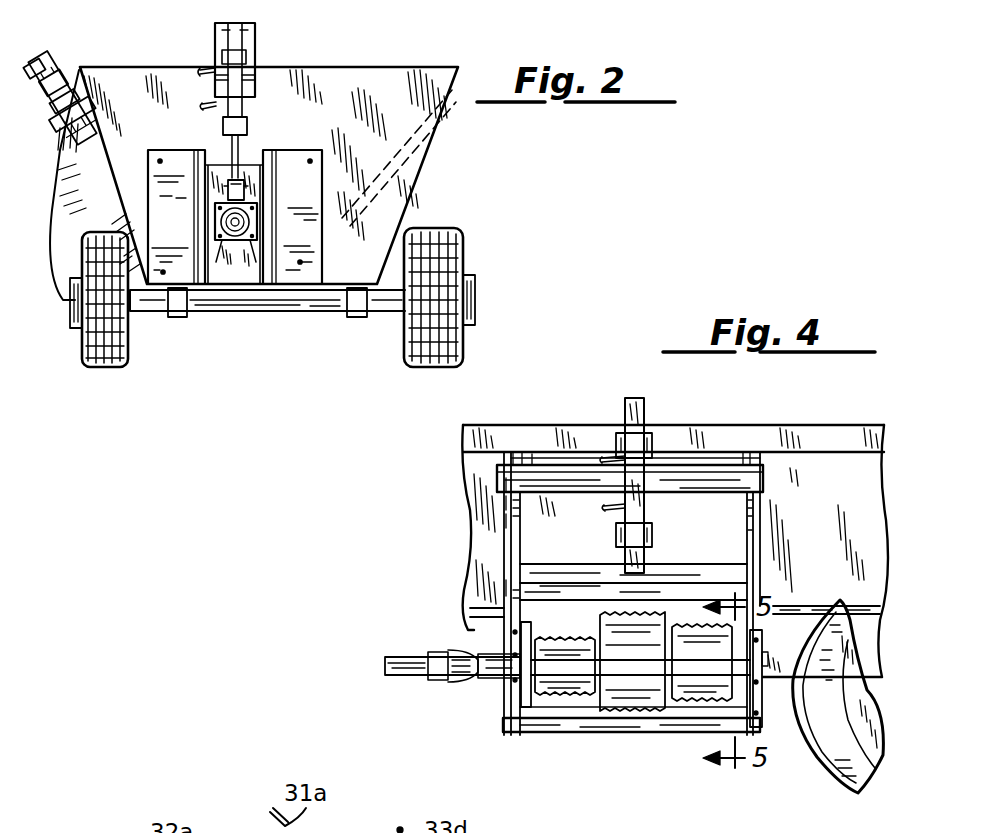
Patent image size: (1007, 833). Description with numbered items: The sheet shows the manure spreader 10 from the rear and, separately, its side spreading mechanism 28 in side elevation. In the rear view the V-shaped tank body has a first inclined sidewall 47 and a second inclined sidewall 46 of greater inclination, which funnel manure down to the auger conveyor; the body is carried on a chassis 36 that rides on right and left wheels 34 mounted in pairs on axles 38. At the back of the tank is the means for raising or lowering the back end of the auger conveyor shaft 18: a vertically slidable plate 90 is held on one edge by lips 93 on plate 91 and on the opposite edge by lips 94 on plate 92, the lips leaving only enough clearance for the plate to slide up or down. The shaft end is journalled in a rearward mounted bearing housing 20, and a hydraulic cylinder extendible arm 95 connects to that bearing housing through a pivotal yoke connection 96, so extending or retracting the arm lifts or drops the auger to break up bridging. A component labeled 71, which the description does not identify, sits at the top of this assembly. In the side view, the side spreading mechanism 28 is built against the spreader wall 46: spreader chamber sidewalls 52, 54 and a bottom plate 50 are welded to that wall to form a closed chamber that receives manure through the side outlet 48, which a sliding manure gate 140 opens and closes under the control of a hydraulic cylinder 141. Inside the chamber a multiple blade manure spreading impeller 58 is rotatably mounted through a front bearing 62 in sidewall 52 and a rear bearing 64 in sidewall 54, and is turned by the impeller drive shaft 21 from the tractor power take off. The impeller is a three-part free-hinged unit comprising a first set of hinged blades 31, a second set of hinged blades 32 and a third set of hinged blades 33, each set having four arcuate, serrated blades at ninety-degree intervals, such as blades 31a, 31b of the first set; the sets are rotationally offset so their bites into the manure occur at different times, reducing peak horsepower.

In FIG. 2, the manure spreader 10 is at (268, 150).
In FIG. 2, the auger conveyor shaft 18 is at (221, 243).
In FIG. 2, the rearward mounted bearing housing 20 is at (251, 242).
In FIG. 4, the impeller drive shaft 21 is at (405, 680).
In FIG. 4, the side spreading mechanism 28 is at (614, 748).
In FIG. 4, the first set of hinged blades 31 is at (692, 698).
In FIG. 4, the hinged blade 31a is at (704, 700).
In FIG. 4, the hinged blade 31b is at (700, 640).
In FIG. 4, the second set of hinged blades 32 is at (645, 706).
In FIG. 4, the third set of hinged blades 33 is at (555, 692).
In FIG. 2, the wheels 34 is at (101, 369).
In FIG. 4, the wheels 34 is at (830, 778).
In FIG. 2, the chassis 36 is at (306, 318).
In FIG. 2, the axles 38 is at (148, 306).
In FIG. 4, the second inclined sidewall 46 is at (862, 487).
In FIG. 2, the first inclined sidewall 47 is at (426, 141).
In FIG. 4, the side outlet 48 is at (580, 625).
In FIG. 4, the bottom plate 50 is at (567, 732).
In FIG. 4, the spreader chamber sidewall 52 is at (512, 508).
In FIG. 2, the spreader chamber sidewall 54 is at (72, 202).
In FIG. 4, the spreader chamber sidewall 54 is at (754, 508).
In FIG. 4, the manure spreading impeller 58 is at (592, 722).
In FIG. 4, the front bearing 62 is at (508, 643).
In FIG. 4, the rear bearing 64 is at (763, 645).
In FIG. 2, the control lever housing 71 is at (237, 82).
In FIG. 2, the vertically slidable plate 90 is at (221, 176).
In FIG. 2, the plate 91 is at (287, 162).
In FIG. 2, the plate 92 is at (179, 165).
In FIG. 2, the lips 93 is at (266, 226).
In FIG. 2, the lips 94 is at (203, 226).
In FIG. 2, the hydraulic cylinder extendible arm 95 is at (244, 143).
In FIG. 2, the pivotal yoke connection 96 is at (246, 192).
In FIG. 4, the sliding manure gate 140 is at (585, 574).
In FIG. 2, the hydraulic cylinder 141 is at (68, 68).
In FIG. 4, the hydraulic cylinder 141 is at (650, 447).